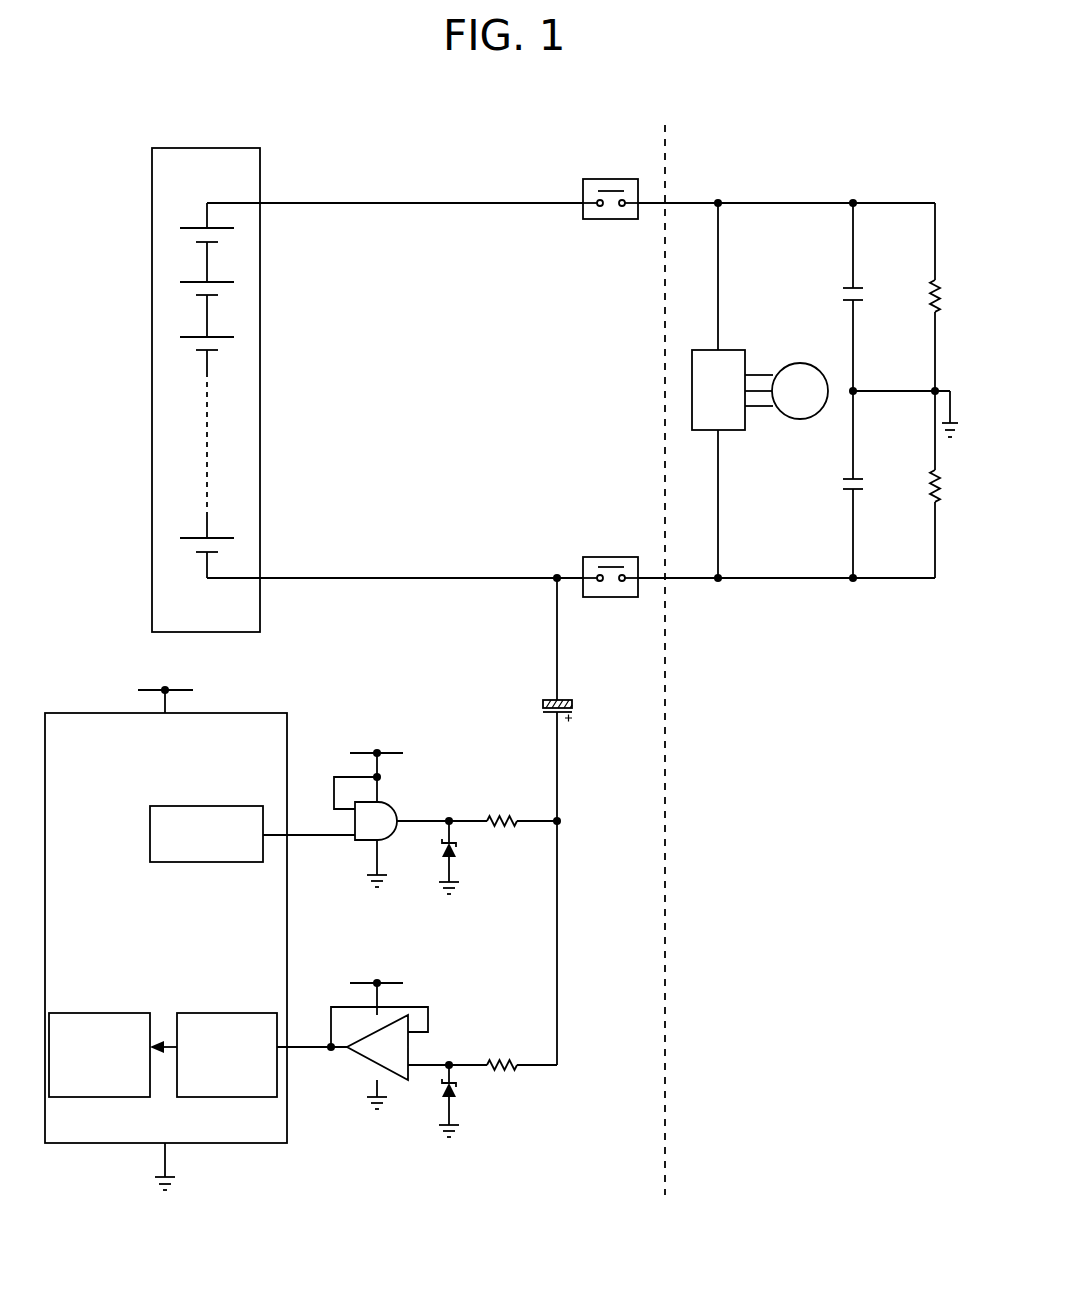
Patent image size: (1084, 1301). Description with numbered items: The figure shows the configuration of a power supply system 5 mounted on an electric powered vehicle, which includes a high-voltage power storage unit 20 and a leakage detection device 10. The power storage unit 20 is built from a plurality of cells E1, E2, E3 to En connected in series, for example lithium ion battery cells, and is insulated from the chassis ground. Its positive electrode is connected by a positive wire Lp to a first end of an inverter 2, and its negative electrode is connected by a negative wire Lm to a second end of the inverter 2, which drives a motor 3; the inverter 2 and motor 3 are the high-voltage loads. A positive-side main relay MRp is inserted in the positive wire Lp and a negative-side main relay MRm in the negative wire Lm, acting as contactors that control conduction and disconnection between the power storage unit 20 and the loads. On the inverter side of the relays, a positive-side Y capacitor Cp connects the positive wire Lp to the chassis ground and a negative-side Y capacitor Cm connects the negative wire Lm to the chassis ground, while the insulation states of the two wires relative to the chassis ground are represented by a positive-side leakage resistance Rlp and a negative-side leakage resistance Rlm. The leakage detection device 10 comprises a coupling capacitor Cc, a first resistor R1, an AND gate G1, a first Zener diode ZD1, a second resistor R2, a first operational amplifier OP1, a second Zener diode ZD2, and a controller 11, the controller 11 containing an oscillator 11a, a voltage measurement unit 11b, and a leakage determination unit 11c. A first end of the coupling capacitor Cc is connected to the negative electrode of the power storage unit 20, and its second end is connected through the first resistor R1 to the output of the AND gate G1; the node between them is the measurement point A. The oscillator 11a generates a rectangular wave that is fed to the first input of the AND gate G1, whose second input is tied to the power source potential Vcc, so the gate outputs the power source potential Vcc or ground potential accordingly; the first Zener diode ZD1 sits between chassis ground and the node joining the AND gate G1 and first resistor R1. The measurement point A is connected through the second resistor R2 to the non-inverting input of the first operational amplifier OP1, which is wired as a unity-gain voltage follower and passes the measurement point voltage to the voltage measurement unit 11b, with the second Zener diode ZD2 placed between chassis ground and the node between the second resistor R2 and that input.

The power storage unit 20 is at (226, 148).
The cell E1 is at (190, 227).
The cell E2 is at (190, 281).
The cell E3 is at (190, 336).
The cell En is at (190, 537).
The positive-side main relay MRp is at (610, 185).
The negative-side main relay MRm is at (610, 563).
The positive wire Lp is at (690, 202).
The negative wire Lm is at (690, 580).
The inverter 2 is at (730, 349).
The motor 3 is at (800, 363).
The positive-side Y capacitor Cp is at (839, 296).
The negative-side Y capacitor Cm is at (837, 484).
The positive-side leakage resistance Rlp is at (917, 296).
The negative-side leakage resistance Rlm is at (915, 486).
The leakage detection device 10 is at (396, 638).
The controller 11 is at (288, 736).
The oscillator 11a is at (236, 805).
The voltage measurement unit 11b is at (215, 1013).
The leakage determination unit 11c is at (128, 1013).
The power source potential Vcc is at (270, 825).
The AND gate G1 is at (397, 810).
The first Zener diode ZD1 is at (430, 857).
The first resistor R1 is at (522, 836).
The measurement point A is at (564, 931).
The coupling capacitor Cc is at (543, 699).
The first operational amplifier OP1 is at (363, 1063).
The second Zener diode ZD2 is at (431, 1101).
The second resistor R2 is at (522, 1080).
The power supply system 5 is at (545, 1212).